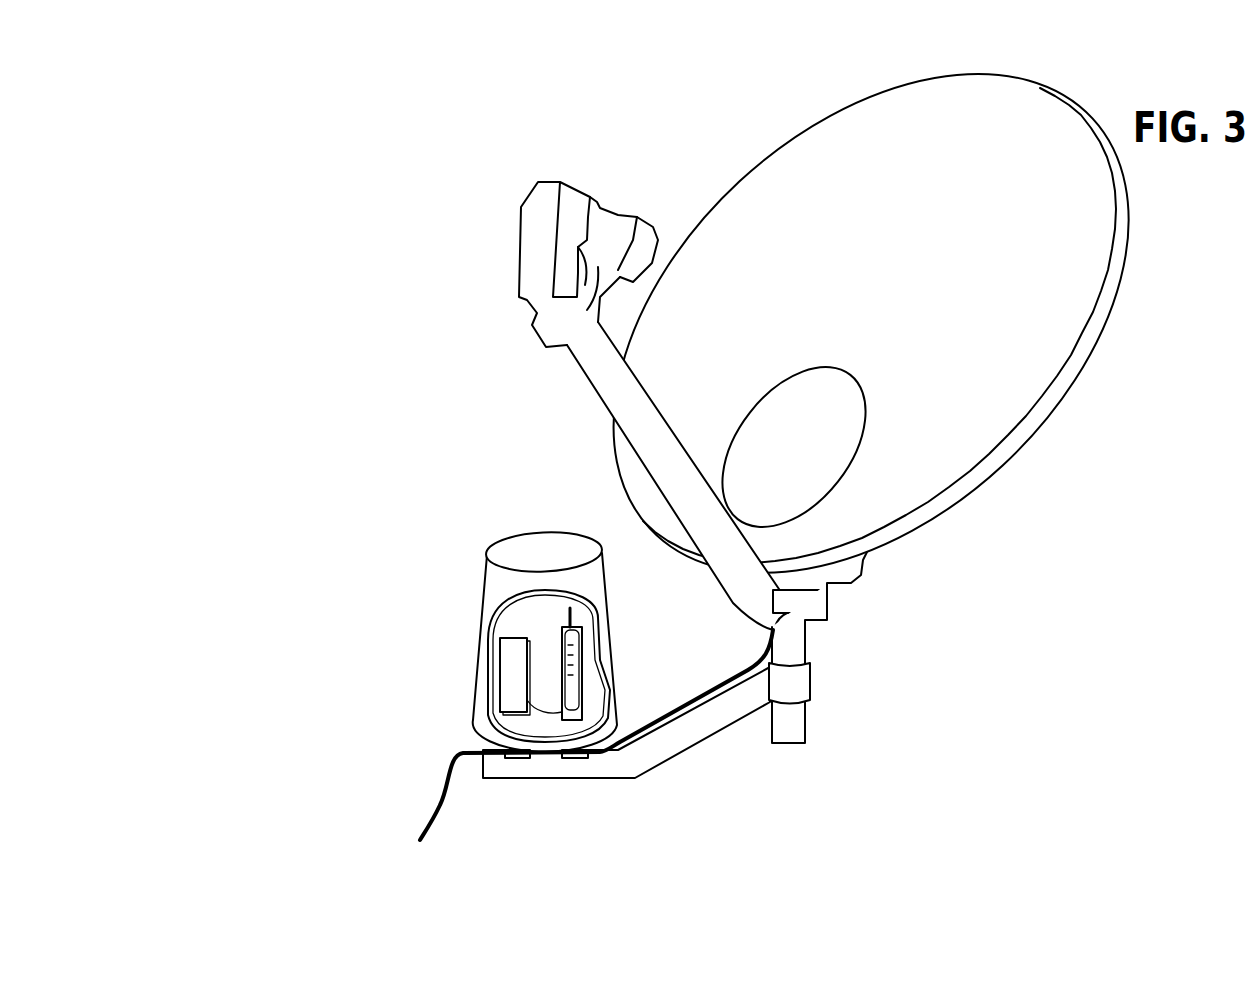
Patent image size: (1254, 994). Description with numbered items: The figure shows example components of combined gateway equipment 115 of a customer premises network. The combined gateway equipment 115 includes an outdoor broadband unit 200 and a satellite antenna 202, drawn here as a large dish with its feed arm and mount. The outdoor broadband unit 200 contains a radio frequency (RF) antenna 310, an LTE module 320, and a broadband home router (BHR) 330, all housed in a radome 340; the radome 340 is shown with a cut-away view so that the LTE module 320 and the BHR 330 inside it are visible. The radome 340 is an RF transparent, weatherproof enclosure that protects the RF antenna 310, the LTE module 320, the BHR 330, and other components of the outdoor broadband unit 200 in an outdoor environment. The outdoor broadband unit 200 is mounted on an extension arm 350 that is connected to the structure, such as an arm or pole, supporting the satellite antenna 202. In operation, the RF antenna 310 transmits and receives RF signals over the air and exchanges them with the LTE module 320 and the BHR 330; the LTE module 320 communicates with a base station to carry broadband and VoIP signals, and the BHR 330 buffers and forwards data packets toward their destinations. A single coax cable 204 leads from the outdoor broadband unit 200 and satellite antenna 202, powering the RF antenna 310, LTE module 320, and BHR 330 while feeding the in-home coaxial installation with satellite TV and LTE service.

The combined gateway equipment 115 is at (292, 82).
The outdoor broadband unit 200 is at (445, 482).
The satellite antenna 202 is at (977, 487).
The coax cable 204 is at (447, 787).
The RF antenna 310 is at (571, 540).
The LTE module 320 is at (500, 677).
The broadband home router (BHR) 330 is at (587, 644).
The radome 340 is at (490, 578).
The extension arm 350 is at (702, 740).